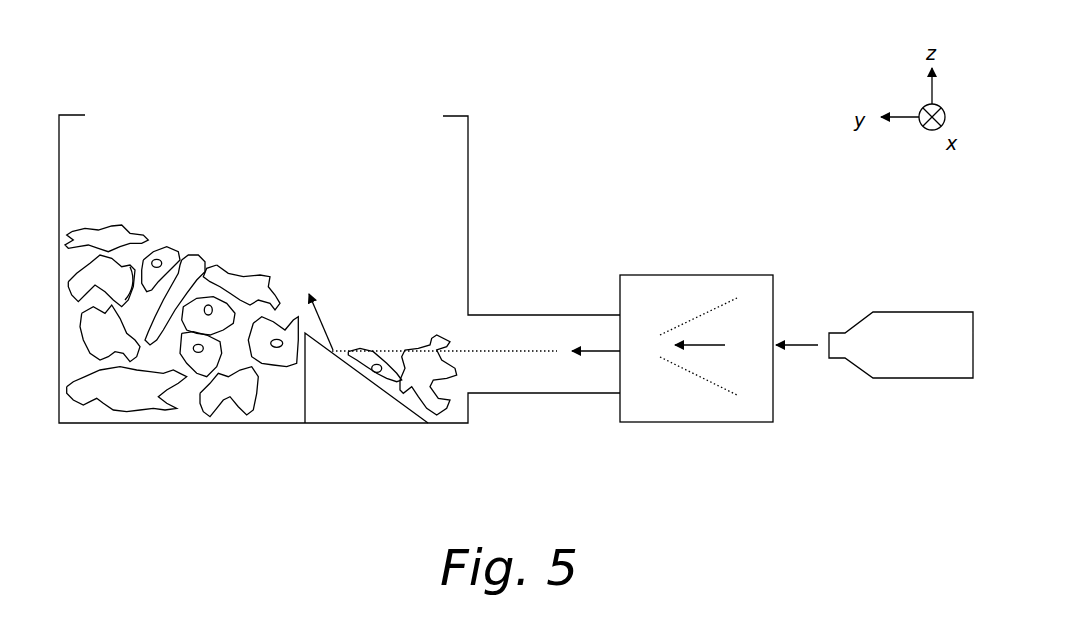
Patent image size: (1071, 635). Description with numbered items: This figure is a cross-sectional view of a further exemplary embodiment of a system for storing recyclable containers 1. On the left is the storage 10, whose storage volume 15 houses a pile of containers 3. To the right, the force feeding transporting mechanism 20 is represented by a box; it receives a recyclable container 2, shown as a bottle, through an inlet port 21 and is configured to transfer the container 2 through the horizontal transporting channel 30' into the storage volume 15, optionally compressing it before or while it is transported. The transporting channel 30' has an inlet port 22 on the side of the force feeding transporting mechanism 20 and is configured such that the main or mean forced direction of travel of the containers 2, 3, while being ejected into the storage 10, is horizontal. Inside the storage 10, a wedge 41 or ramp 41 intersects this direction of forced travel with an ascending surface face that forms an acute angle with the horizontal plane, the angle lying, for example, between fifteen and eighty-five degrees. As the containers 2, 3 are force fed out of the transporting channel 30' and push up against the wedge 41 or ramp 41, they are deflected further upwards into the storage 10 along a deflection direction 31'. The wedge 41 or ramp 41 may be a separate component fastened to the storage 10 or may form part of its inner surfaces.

The system for storing recyclable containers 1 is at (758, 108).
The recyclable container 2 is at (912, 312).
The containers housed in storage 3 is at (192, 255).
The storage 10 is at (468, 147).
The storage volume 15 is at (288, 166).
The force feeding transporting mechanism 20 is at (700, 275).
The inlet port 21 is at (800, 345).
The inlet port 22 is at (592, 351).
The horizontal transporting channel 30' is at (444, 285).
The deflection direction 31' is at (343, 288).
The wedge or ramp 41 is at (378, 393).